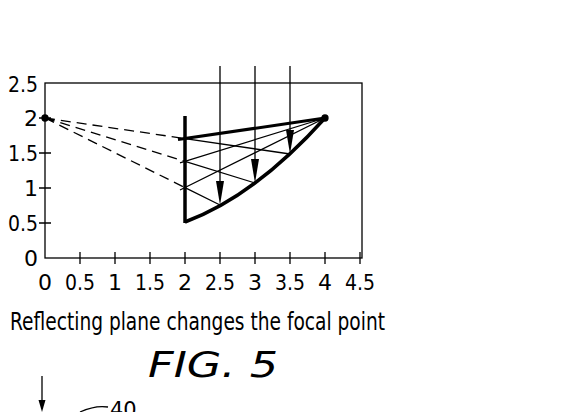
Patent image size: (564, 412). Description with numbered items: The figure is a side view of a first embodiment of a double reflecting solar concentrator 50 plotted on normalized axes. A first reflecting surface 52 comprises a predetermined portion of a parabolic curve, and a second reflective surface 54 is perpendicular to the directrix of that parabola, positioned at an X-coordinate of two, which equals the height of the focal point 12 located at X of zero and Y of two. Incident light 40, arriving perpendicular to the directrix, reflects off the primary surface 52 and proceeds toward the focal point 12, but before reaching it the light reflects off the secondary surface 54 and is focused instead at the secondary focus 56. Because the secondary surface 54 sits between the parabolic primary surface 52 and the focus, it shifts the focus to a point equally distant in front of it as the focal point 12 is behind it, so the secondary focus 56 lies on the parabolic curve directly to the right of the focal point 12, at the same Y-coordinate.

The focal point 12 is at (47, 117).
The incident light 40 is at (292, 72).
The double reflecting solar concentrator 50 is at (335, 152).
The first reflecting surface 52 is at (268, 173).
The second reflective surface 54 is at (187, 130).
The secondary focus 56 is at (328, 116).